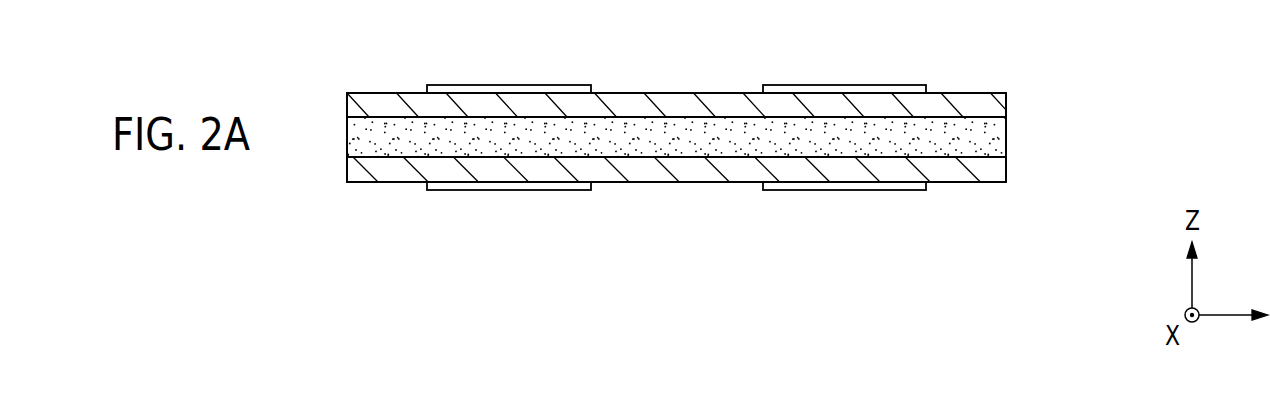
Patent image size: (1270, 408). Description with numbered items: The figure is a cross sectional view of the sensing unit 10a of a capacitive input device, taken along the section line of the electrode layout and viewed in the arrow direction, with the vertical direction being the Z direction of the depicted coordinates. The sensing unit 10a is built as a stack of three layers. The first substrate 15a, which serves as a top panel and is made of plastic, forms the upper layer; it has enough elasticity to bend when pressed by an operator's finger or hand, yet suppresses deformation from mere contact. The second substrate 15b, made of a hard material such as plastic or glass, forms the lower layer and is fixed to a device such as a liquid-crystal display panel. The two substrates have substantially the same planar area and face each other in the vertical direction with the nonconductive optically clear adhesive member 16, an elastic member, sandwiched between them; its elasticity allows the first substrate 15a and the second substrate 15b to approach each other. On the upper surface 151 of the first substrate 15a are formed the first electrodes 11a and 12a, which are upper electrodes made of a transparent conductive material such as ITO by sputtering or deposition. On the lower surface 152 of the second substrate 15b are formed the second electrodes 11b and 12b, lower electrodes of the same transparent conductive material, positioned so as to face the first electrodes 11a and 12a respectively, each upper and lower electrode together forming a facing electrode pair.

The sensing unit 10a is at (350, 222).
The first electrode 11a is at (513, 85).
The second electrode 11b is at (513, 190).
The first electrode 12a is at (848, 85).
The second electrode 12b is at (848, 190).
The first substrate 15a is at (1007, 104).
The second substrate 15b is at (1007, 169).
The optically clear adhesive member 16 is at (1007, 134).
The upper surface 151 is at (973, 93).
The lower surface 152 is at (973, 182).